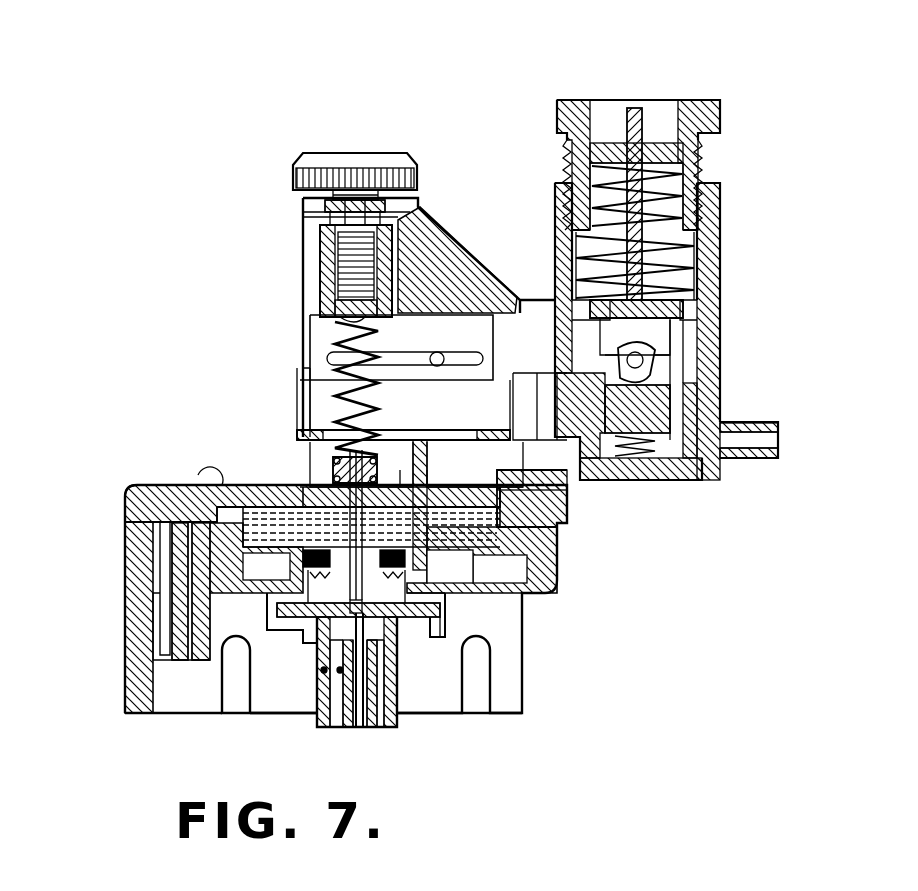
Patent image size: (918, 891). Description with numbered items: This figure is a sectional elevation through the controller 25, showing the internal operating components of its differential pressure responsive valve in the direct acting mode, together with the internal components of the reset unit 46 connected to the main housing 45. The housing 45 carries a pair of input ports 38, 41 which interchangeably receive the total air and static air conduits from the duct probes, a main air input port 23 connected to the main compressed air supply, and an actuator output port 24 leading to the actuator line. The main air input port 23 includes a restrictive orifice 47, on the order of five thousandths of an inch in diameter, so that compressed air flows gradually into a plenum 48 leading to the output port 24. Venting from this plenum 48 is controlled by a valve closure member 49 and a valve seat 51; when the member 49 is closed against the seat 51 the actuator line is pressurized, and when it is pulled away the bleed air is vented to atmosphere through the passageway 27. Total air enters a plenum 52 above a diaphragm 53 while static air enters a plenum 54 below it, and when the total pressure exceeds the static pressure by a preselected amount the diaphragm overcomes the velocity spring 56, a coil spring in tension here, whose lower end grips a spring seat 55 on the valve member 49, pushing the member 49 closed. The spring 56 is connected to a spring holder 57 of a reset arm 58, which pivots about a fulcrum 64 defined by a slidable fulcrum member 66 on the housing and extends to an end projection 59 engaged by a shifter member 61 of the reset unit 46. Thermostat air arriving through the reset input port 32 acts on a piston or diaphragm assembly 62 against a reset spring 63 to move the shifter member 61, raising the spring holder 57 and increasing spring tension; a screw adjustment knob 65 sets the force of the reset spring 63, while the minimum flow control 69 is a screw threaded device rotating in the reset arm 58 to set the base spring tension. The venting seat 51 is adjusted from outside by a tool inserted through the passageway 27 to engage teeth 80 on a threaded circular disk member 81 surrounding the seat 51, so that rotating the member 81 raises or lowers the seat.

The main air input port 23 is at (333, 727).
The actuator output port 24 is at (383, 727).
The controller 25 is at (118, 430).
The passageway 27 is at (540, 565).
The reset input port 32 is at (770, 422).
The input port 38 is at (165, 668).
The input port 41 is at (195, 655).
The main housing 45 is at (125, 548).
The reset unit 46 is at (722, 303).
The restrictive orifice 47 is at (317, 690).
The plenum 48 is at (453, 714).
The valve closure member 49 is at (326, 477).
The valve seat 51 is at (302, 655).
The plenum 52 is at (522, 503).
The diaphragm 53 is at (490, 533).
The plenum 54 is at (222, 498).
The spring seat 55 is at (312, 435).
The spring 56 is at (340, 390).
The spring holder 57 is at (323, 283).
The reset arm 58 is at (439, 248).
The end projection 59 is at (655, 359).
The shifter member 61 is at (690, 344).
The piston or diaphragm assembly 62 is at (637, 422).
The reset spring 63 is at (595, 178).
The fulcrum 64 is at (440, 352).
The screw adjustment knob 65 is at (568, 100).
The slidable fulcrum member 66 is at (330, 452).
The minimum flow control 69 is at (340, 153).
The teeth 80 is at (447, 610).
The circular disk member 81 is at (432, 630).